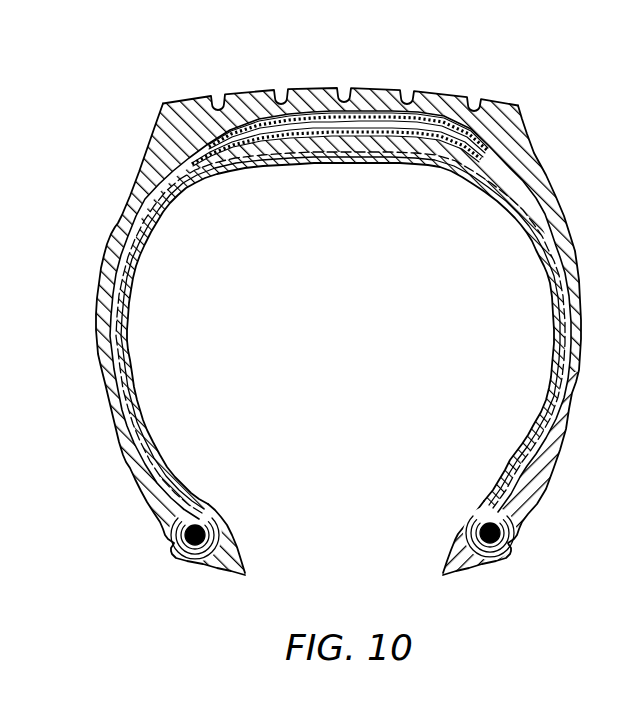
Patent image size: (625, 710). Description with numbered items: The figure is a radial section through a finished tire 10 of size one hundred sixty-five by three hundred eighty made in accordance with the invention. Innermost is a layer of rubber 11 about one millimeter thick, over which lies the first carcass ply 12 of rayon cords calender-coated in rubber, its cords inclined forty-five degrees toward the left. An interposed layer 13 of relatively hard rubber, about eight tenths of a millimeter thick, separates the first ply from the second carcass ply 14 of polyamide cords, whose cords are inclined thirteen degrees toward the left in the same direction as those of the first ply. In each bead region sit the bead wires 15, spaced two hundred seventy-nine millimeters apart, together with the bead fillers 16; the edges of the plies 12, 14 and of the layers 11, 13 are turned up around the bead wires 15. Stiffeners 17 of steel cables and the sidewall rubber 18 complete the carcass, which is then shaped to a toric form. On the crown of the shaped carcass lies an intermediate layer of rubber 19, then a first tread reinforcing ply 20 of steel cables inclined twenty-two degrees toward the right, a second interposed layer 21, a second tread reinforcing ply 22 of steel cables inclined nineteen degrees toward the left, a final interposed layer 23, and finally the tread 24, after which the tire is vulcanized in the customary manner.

The tire 10 is at (126, 187).
The layer of rubber 11 is at (127, 383).
The first carcass ply 12 is at (120, 300).
The interposed layer 13 is at (108, 325).
The second carcass ply 14 is at (112, 272).
The bead wires 15 is at (215, 528).
The bead fillers 16 is at (190, 520).
The stiffeners 17 is at (160, 505).
The sidewall rubber 18 is at (122, 440).
The intermediate layer of rubber 19 is at (243, 150).
The first tread reinforcing ply 20 is at (300, 137).
The second interposed layer 21 is at (342, 127).
The second tread reinforcing ply 22 is at (441, 128).
The final interposed layer 23 is at (391, 116).
The tread 24 is at (307, 95).